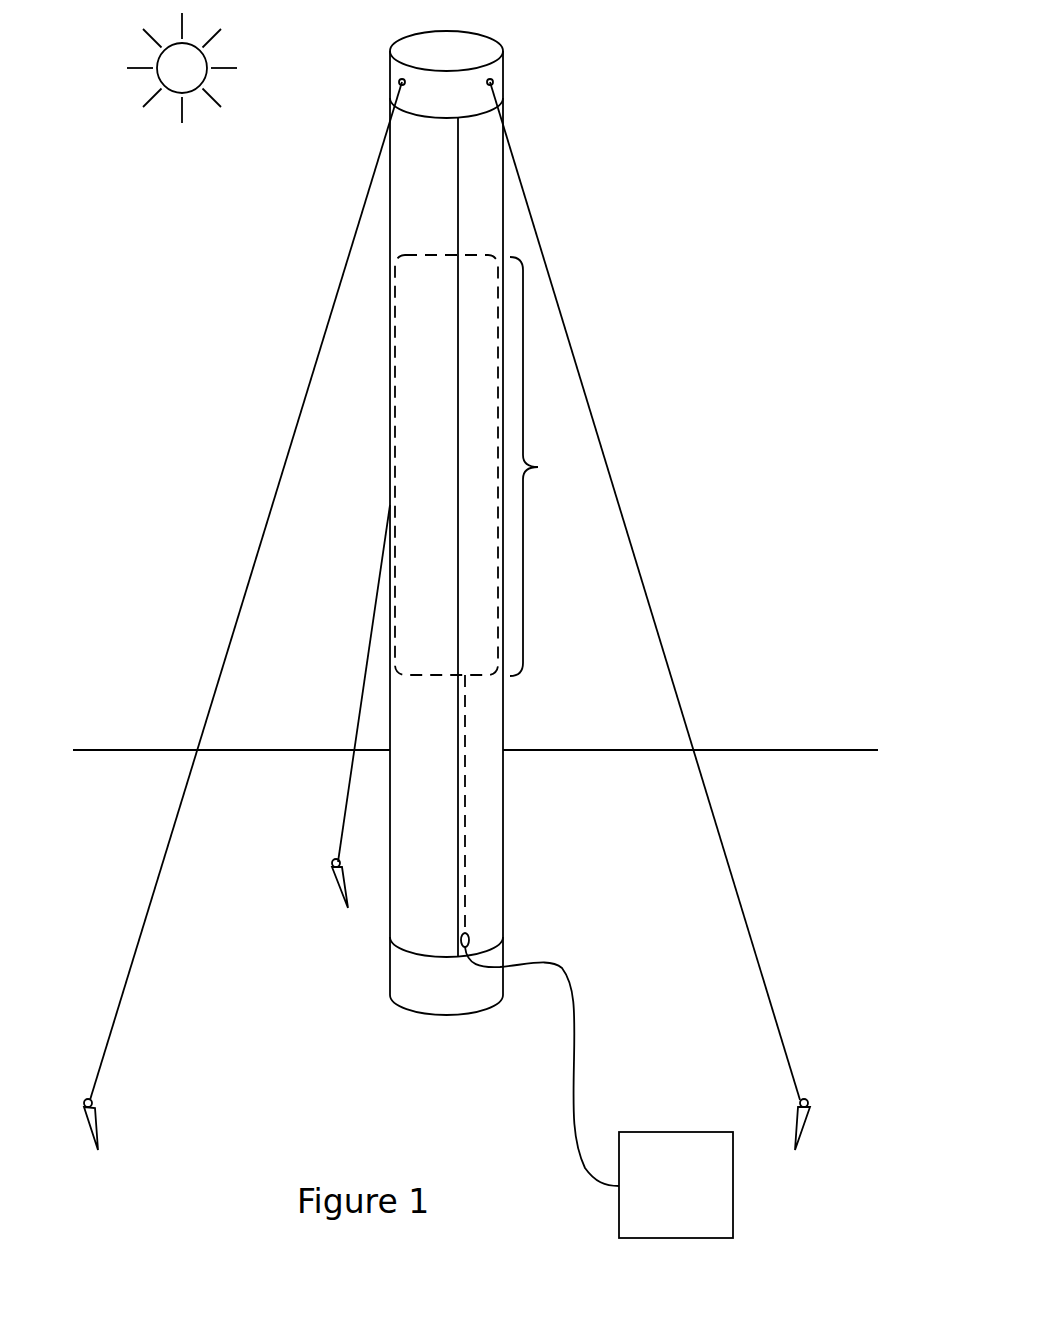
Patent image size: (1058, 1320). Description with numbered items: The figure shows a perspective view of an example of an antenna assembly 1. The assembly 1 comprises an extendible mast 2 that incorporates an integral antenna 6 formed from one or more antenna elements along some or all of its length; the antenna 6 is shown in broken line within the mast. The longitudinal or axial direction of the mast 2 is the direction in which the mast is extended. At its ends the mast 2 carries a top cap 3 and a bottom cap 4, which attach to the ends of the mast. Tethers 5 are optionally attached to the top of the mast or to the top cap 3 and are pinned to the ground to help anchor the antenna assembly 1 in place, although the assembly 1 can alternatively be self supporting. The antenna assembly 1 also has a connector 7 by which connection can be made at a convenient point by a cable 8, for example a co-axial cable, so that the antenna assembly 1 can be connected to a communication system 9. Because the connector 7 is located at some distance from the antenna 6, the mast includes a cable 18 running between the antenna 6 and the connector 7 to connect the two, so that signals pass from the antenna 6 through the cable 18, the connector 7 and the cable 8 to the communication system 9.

The antenna assembly 1 is at (770, 133).
The extendible mast 2 is at (410, 302).
The top cap 3 is at (479, 52).
The bottom cap 4 is at (420, 998).
The tethers 5 is at (650, 612).
The antenna 6 is at (540, 466).
The connector 7 is at (478, 930).
The cable 8 is at (578, 1058).
The communication system 9 is at (686, 1199).
The cable 18 is at (466, 826).